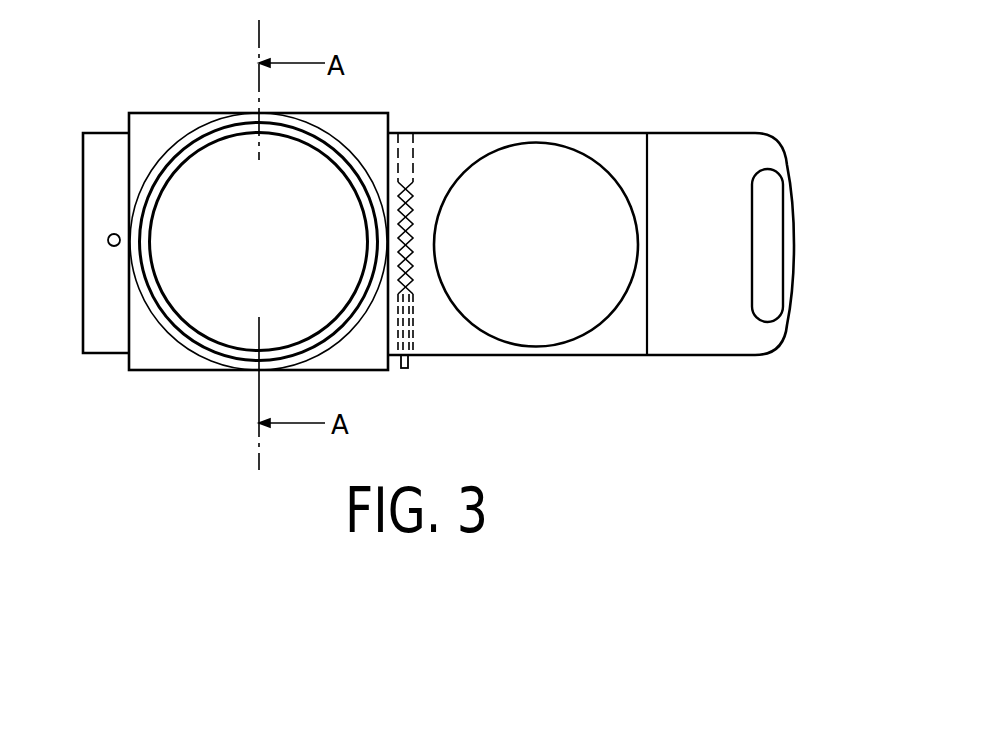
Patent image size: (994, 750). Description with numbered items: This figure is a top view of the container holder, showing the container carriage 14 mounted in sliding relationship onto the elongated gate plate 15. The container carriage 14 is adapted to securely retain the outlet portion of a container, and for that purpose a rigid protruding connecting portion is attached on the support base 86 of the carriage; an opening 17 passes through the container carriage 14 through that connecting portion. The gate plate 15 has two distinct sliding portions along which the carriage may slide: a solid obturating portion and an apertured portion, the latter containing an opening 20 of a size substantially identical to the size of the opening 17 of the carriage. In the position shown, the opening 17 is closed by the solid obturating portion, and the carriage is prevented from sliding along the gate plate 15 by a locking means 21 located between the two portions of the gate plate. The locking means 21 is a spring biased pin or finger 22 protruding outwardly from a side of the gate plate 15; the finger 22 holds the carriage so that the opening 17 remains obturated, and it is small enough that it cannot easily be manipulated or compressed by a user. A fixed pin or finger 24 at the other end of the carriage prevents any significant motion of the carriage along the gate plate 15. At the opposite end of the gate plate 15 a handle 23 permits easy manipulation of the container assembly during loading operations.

The container carriage 14 is at (212, 108).
The support base 86 is at (148, 128).
The opening 17 is at (358, 208).
The fixed pin or finger 24 is at (108, 240).
The gate plate 15 is at (560, 130).
The opening 20 is at (590, 290).
The handle 23 is at (762, 247).
The spring biased pin or finger 22 is at (410, 362).
The locking means 21 is at (406, 372).